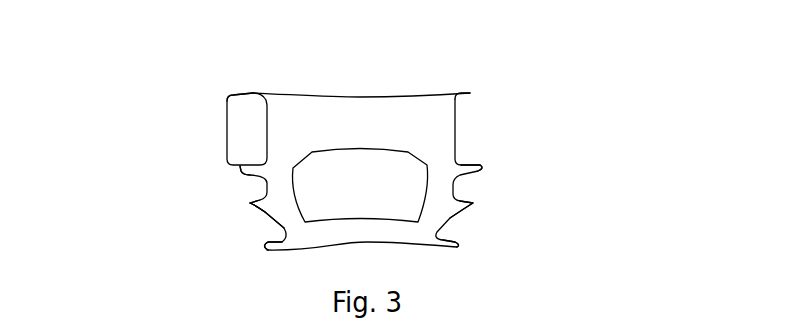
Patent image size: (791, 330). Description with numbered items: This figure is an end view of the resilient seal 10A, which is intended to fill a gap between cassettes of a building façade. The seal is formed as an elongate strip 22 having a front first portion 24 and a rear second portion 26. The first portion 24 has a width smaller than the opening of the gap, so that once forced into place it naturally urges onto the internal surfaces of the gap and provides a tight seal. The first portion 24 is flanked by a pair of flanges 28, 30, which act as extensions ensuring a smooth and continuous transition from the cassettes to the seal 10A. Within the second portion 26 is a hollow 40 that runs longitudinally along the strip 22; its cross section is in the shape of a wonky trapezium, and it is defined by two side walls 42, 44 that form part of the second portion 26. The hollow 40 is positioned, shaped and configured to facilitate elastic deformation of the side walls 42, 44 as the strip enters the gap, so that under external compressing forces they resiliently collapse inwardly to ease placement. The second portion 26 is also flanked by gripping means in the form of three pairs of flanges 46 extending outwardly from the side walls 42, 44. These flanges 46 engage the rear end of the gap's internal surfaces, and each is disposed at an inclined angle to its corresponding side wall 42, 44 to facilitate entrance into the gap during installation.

The resilient seal 10A is at (397, 82).
The elongate strip 22 is at (457, 133).
The first portion 24 is at (229, 112).
The second portion 26 is at (232, 167).
The flange 28 is at (250, 93).
The flange 30 is at (470, 92).
The hollow 40 is at (398, 197).
The side wall 42 is at (282, 204).
The side wall 44 is at (443, 180).
The flanges 46 is at (250, 203).